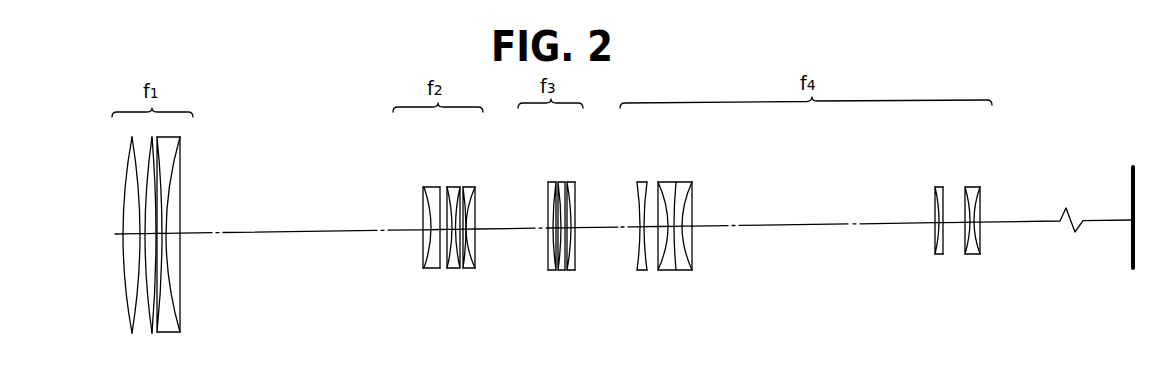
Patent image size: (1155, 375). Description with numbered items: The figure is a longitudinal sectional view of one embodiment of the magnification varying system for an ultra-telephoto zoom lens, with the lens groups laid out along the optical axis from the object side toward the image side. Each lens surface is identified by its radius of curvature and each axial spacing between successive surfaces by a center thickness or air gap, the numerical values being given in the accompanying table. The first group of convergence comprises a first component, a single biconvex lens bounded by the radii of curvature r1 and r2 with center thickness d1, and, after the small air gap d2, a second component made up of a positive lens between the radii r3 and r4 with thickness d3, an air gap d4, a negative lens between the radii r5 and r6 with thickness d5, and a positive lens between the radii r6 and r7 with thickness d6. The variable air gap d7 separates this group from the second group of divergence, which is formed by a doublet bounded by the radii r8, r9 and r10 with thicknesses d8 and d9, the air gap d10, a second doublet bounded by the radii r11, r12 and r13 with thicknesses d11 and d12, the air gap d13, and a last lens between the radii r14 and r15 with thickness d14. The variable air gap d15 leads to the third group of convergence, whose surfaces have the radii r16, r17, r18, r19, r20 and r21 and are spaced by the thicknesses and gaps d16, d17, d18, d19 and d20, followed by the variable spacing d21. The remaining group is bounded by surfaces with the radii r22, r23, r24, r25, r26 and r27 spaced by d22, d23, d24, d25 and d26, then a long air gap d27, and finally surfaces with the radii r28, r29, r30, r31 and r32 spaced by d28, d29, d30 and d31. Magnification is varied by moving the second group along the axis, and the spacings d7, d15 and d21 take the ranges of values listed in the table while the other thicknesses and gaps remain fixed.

The radius of curvature r1 is at (125, 322).
The radius of curvature r2 is at (139, 322).
The radius of curvature r3 is at (146, 322).
The radius of curvature r4 is at (156, 322).
The radius of curvature r5 is at (160, 333).
The radius of curvature r6 is at (170, 333).
The radius of curvature r7 is at (181, 333).
The radius of curvature r8 is at (424, 269).
The radius of curvature r9 is at (438, 269).
The radius of curvature r10 is at (447, 269).
The radius of curvature r11 is at (452, 269).
The radius of curvature r12 is at (458, 269).
The radius of curvature r13 is at (464, 269).
The radius of curvature r14 is at (468, 269).
The radius of curvature r15 is at (475, 269).
The radius of curvature r16 is at (549, 264).
The radius of curvature r17 is at (555, 271).
The radius of curvature r18 is at (559, 271).
The radius of curvature r19 is at (565, 271).
The radius of curvature r20 is at (570, 271).
The radius of curvature r21 is at (576, 263).
The radius of curvature r22 is at (638, 271).
The radius of curvature r23 is at (645, 271).
The radius of curvature r24 is at (659, 271).
The radius of curvature r25 is at (676, 271).
The radius of curvature r26 is at (684, 271).
The radius of curvature r27 is at (692, 271).
The radius of curvature r28 is at (936, 255).
The radius of curvature r29 is at (942, 255).
The radius of curvature r30 is at (966, 255).
The radius of curvature r31 is at (973, 255).
The radius of curvature r32 is at (980, 255).
The center thickness d1 is at (126, 233).
The air gap d2 is at (141, 235).
The center thickness d3 is at (150, 238).
The air gap d4 is at (160, 230).
The center thickness d5 is at (165, 229).
The center thickness d6 is at (170, 238).
The variable air gap d7 is at (301, 221).
The center thickness d8 is at (430, 228).
The center thickness d9 is at (444, 231).
The air gap d10 is at (450, 232).
The center thickness d11 is at (464, 224).
The center thickness d12 is at (466, 227).
The air gap d13 is at (460, 234).
The center thickness d14 is at (470, 231).
The variable air gap d15 is at (511, 218).
The center thickness or air gap d16 is at (552, 224).
The center thickness or air gap d17 is at (553, 232).
The center thickness or air gap d18 is at (561, 224).
The center thickness or air gap d19 is at (562, 228).
The center thickness or air gap d20 is at (571, 232).
The variable air gap d21 is at (606, 216).
The center thickness or air gap d22 is at (642, 230).
The center thickness or air gap d23 is at (641, 234).
The center thickness or air gap d24 is at (668, 224).
The center thickness or air gap d25 is at (676, 226).
The center thickness or air gap d26 is at (685, 230).
The air gap d27 is at (813, 213).
The center thickness or air gap d28 is at (939, 221).
The center thickness or air gap d29 is at (959, 211).
The center thickness or air gap d30 is at (972, 220).
The center thickness or air gap d31 is at (976, 225).